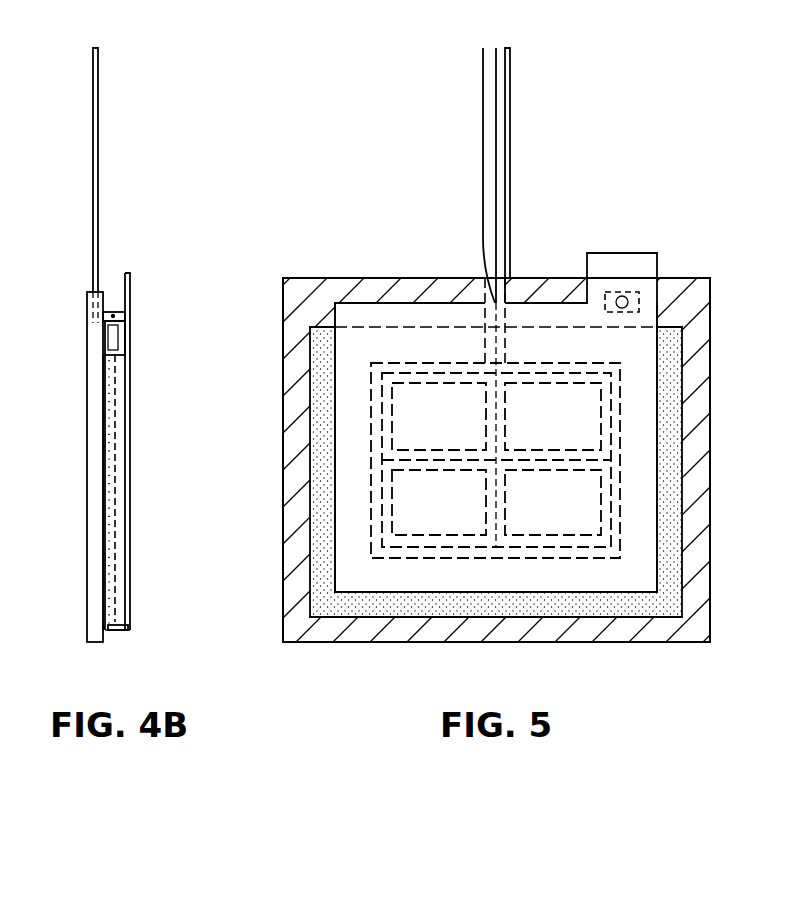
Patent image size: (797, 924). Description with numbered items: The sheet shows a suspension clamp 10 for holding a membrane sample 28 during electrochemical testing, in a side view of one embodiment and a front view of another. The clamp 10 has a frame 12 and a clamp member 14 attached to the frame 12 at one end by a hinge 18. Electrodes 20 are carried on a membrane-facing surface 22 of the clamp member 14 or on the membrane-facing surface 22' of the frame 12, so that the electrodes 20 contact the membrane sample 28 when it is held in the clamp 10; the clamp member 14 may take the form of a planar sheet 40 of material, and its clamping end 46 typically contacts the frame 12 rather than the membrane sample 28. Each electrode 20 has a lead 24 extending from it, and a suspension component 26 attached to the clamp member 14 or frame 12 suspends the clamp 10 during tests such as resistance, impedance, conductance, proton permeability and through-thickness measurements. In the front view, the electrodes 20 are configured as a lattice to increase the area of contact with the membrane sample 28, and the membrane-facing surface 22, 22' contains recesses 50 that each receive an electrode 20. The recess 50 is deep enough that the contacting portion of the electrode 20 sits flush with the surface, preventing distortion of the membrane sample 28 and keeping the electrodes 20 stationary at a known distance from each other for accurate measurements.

In FIG. 4B, the suspension clamp 10 is at (194, 166).
In FIG. 4B, the frame 12 is at (97, 633).
In FIG. 5, the frame 12 is at (690, 592).
In FIG. 4B, the clamp member 14 is at (130, 558).
In FIG. 4B, the hinge 18 is at (113, 312).
In FIG. 5, the hinge 18 is at (622, 294).
In FIG. 4B, the electrode 20 is at (115, 592).
In FIG. 5, the electrode 20 is at (610, 513).
In FIG. 4B, the membrane-facing surface 22 is at (157, 492).
In FIG. 4B, the membrane-facing surface 22' is at (60, 492).
In FIG. 5, the lead 24 is at (496, 203).
In FIG. 4B, the suspension component 26 is at (98, 78).
In FIG. 5, the suspension component 26 is at (511, 140).
In FIG. 4B, the membrane sample 28 is at (115, 622).
In FIG. 5, the membrane sample 28 is at (325, 465).
In FIG. 5, the planar sheet 40 is at (599, 572).
In FIG. 4B, the clamping end 46 is at (123, 630).
In FIG. 5, the recess 50 is at (615, 427).